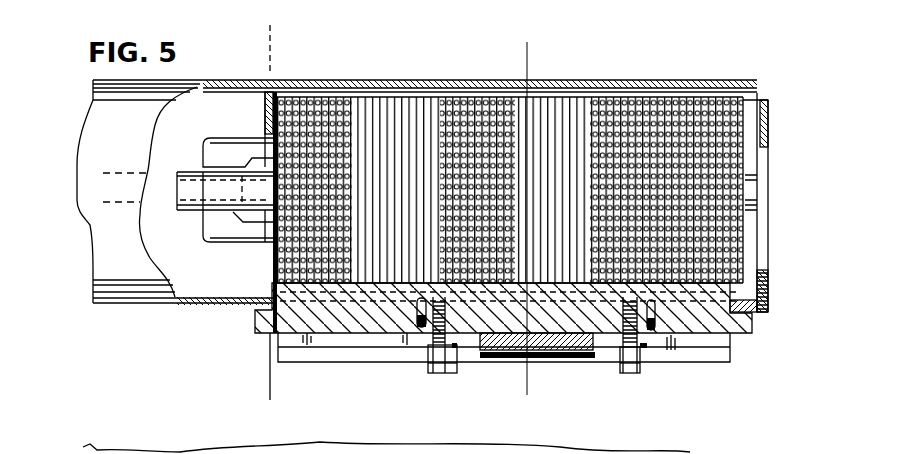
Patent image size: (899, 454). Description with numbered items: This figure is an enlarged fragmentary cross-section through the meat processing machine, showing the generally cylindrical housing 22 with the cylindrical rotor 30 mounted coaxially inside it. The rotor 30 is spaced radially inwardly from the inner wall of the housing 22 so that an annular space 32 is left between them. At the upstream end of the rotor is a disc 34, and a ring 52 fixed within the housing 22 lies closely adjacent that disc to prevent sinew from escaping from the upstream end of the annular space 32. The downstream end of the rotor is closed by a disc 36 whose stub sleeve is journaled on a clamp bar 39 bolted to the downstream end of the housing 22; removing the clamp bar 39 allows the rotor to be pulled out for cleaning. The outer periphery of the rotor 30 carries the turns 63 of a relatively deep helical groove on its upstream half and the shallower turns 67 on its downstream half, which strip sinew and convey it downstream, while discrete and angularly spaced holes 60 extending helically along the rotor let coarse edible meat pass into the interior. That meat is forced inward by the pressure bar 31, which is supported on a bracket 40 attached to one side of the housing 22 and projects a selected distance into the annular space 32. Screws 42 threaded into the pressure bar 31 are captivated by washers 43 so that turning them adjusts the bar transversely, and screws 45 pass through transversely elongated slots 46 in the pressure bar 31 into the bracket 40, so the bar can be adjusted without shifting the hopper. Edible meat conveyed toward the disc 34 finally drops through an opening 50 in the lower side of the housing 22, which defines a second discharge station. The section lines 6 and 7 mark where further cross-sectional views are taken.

The section line 6- 6 is at (527, 42).
The section line 7- 7 is at (262, 25).
The housing 22 is at (470, 80).
The rotor 30 is at (607, 86).
The pressure bar 31 is at (727, 333).
The annular space 32 is at (348, 330).
The disc 34 is at (237, 250).
The disc 36 is at (740, 133).
The clamp bar 39 is at (767, 291).
The bracket 40 is at (507, 357).
The screws 42 is at (447, 373).
The washers 43 is at (457, 348).
The screws 45 is at (420, 302).
The slots 46 is at (438, 357).
The opening 50 is at (207, 222).
The ring 52 is at (271, 110).
The holes 60 is at (363, 97).
The turns 63 is at (412, 117).
The turns 67 is at (669, 185).